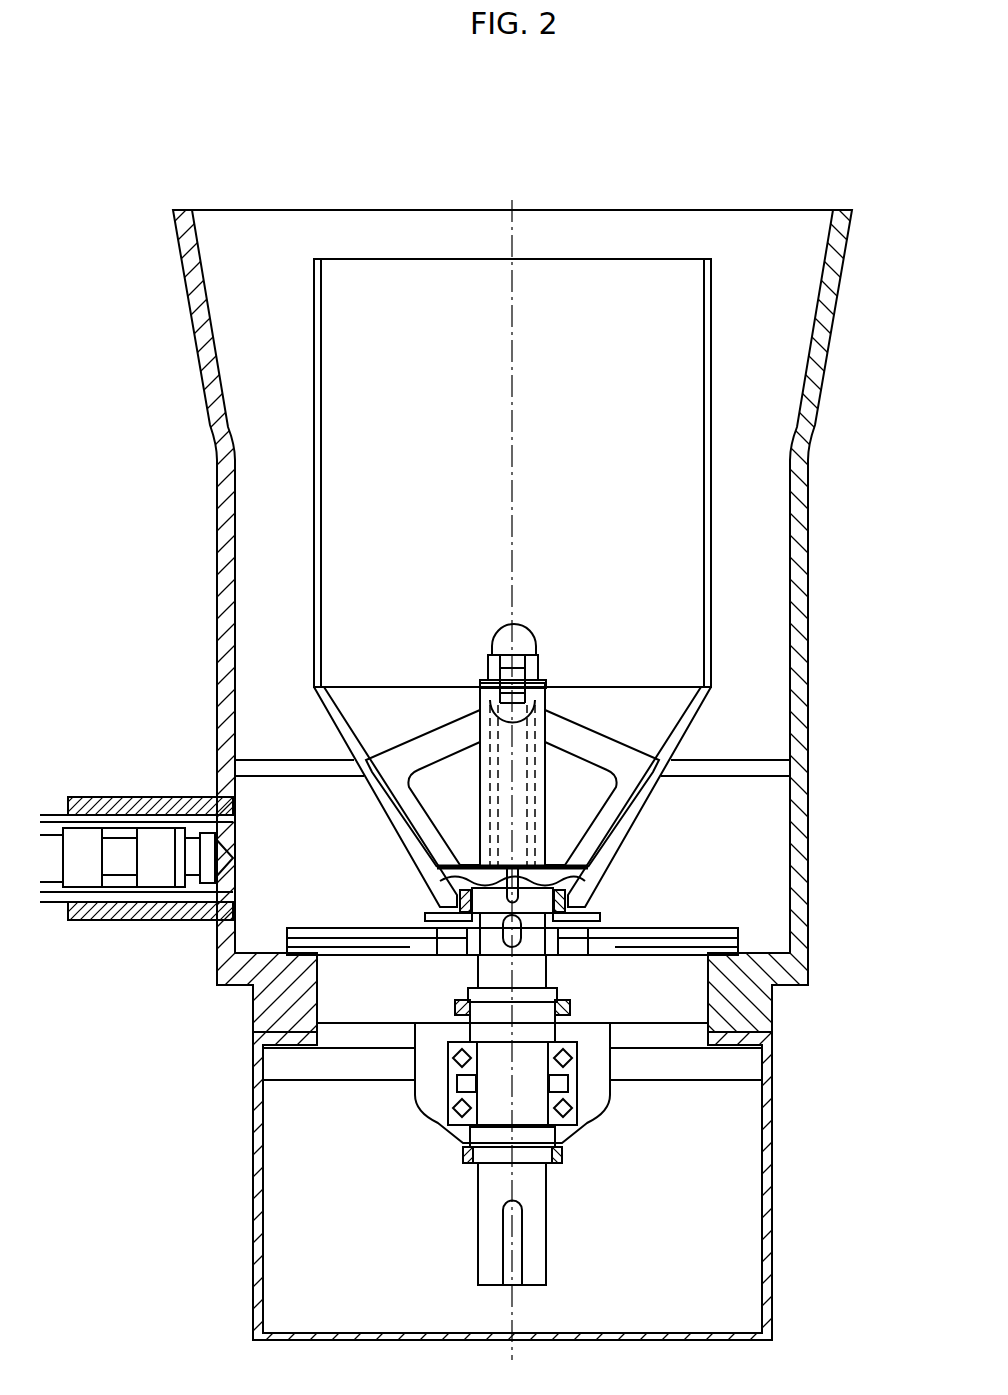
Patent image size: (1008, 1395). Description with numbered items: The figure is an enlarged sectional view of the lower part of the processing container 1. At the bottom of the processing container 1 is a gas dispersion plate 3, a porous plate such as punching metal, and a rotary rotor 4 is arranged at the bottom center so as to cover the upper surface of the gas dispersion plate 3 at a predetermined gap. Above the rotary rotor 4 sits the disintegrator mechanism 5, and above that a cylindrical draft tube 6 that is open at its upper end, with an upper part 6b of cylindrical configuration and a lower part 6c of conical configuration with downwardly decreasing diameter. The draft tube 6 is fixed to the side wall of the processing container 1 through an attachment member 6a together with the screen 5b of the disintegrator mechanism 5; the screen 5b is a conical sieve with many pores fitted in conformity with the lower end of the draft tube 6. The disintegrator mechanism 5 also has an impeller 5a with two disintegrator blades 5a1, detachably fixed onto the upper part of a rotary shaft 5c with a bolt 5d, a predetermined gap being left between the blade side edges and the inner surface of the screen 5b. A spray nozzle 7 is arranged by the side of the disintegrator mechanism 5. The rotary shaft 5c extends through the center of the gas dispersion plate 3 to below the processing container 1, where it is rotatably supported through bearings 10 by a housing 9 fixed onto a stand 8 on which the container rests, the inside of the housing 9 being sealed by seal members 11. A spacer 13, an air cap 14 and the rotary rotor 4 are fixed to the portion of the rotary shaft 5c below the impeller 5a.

The processing container 1 is at (205, 385).
The gas dispersion plate 3 is at (420, 967).
The rotary rotor 4 is at (387, 928).
The disintegrator mechanism 5 is at (513, 941).
The impeller 5a is at (512, 732).
The disintegrator blades 5a1 is at (418, 817).
The screen 5b is at (643, 813).
The rotary shaft 5c is at (493, 1185).
The bolt 5d is at (490, 668).
The draft tube 6 is at (564, 583).
The attachment member 6a is at (748, 767).
The upper part of draft tube 6b is at (713, 474).
The lower part of draft tube 6c is at (700, 708).
The spray nozzle 7 is at (150, 877).
The stand 8 is at (255, 1160).
The housing 9 is at (430, 1103).
The bearings 10 is at (570, 1047).
The seal members 11 is at (567, 1003).
The spacer 13 is at (443, 863).
The air cap 14 is at (443, 902).